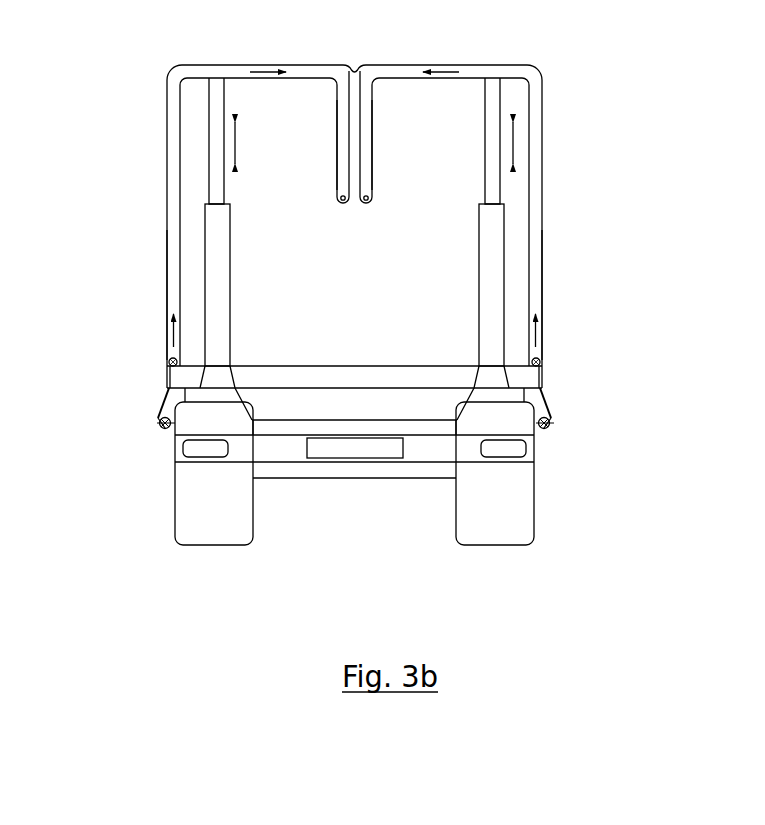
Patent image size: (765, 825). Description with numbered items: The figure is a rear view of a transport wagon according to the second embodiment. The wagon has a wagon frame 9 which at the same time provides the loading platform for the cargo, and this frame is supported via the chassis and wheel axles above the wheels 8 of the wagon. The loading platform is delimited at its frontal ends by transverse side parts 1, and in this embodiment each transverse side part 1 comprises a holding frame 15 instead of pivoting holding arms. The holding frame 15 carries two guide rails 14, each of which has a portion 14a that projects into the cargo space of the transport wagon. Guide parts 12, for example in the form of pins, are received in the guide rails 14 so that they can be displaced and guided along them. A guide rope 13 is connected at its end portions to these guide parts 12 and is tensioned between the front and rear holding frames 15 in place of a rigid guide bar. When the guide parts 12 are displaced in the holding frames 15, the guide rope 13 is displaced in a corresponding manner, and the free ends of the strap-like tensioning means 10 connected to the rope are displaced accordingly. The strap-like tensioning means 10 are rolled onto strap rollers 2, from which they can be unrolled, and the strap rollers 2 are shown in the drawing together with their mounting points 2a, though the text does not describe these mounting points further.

The transverse side part 1 is at (359, 276).
The strap roller 2 is at (165, 430).
The pivot bolt 2a is at (158, 430).
The wheel 8 is at (213, 528).
The wagon frame 9 is at (350, 377).
The strap-like tensioning means 10 is at (160, 400).
The guide part 12 is at (178, 358).
The guide rope 13 is at (168, 358).
The guide rail 14 is at (173, 183).
The projecting portion of guide rail 14a is at (341, 158).
The holding frame 15 is at (160, 225).